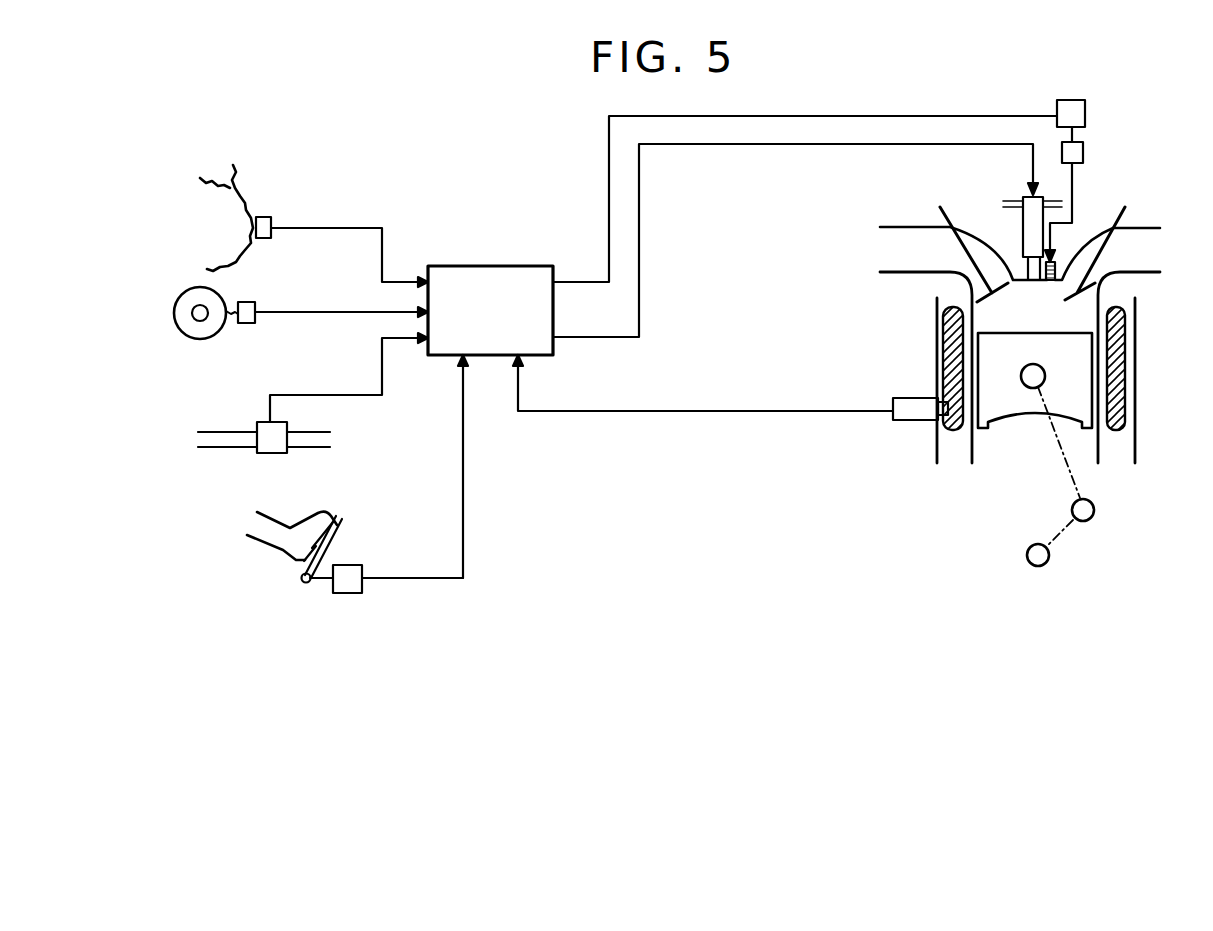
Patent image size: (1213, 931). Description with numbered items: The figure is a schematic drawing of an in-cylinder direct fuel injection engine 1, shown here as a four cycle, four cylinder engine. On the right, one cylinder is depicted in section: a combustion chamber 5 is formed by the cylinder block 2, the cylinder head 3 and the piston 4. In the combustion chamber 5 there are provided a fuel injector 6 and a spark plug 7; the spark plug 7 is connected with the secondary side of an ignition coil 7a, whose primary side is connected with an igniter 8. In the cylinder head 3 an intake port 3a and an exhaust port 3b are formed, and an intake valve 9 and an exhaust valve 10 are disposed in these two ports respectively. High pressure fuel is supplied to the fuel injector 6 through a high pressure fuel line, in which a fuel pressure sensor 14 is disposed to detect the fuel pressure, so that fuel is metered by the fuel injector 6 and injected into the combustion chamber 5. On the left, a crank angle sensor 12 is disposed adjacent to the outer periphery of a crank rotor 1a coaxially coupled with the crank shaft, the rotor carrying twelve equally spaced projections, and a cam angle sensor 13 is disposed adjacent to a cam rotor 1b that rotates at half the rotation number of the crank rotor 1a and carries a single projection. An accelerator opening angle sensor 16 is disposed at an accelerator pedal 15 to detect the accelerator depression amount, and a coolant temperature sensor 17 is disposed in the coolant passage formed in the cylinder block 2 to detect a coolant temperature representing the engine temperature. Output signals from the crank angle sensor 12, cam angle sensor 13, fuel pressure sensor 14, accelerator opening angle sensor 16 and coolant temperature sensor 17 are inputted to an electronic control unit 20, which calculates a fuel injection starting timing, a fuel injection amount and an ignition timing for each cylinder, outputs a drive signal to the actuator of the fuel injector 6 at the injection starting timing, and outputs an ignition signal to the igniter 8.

The in-cylinder direct fuel injection engine 1 is at (1038, 321).
The crank rotor 1a is at (233, 177).
The cam rotor 1b is at (191, 339).
The cylinder block 2 is at (1137, 447).
The cylinder head 3 is at (1113, 283).
The intake port 3a is at (975, 282).
The exhaust port 3b is at (1090, 277).
The piston 4 is at (1017, 402).
The combustion chamber 5 is at (1083, 328).
The fuel injector 6 is at (1023, 222).
The spark plug 7 is at (1048, 284).
The ignition coil 7a is at (1084, 153).
The igniter 8 is at (1086, 112).
The intake valve 9 is at (974, 270).
The exhaust valve 10 is at (1089, 270).
The crank angle sensor 12 is at (272, 218).
The cam angle sensor 13 is at (254, 301).
The fuel pressure sensor 14 is at (272, 455).
The accelerator pedal 15 is at (335, 519).
The accelerator opening angle sensor 16 is at (365, 565).
The coolant temperature sensor 17 is at (900, 422).
The electronic control unit (ECU) 20 is at (528, 263).